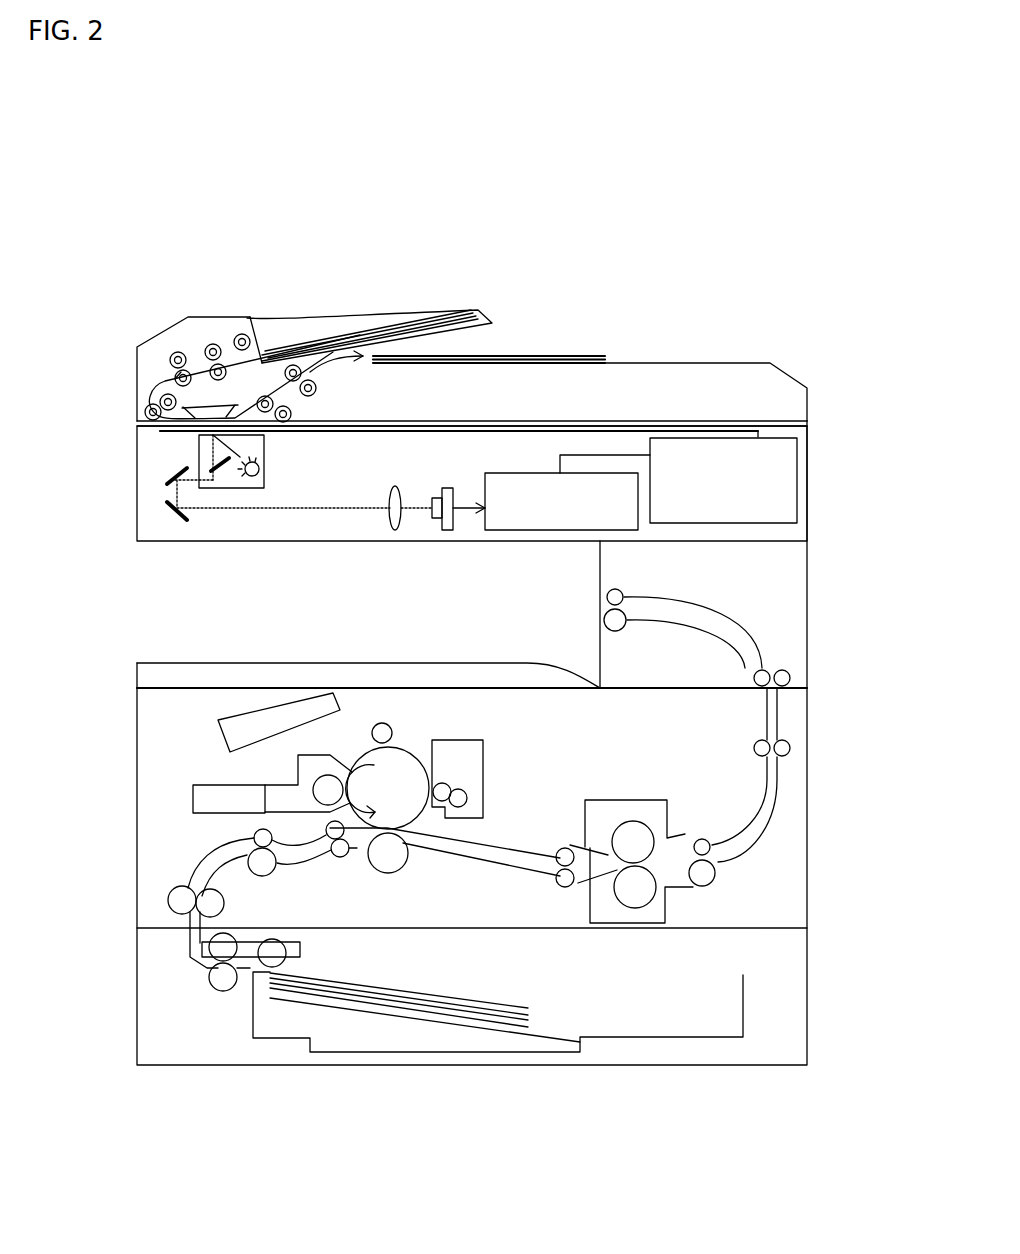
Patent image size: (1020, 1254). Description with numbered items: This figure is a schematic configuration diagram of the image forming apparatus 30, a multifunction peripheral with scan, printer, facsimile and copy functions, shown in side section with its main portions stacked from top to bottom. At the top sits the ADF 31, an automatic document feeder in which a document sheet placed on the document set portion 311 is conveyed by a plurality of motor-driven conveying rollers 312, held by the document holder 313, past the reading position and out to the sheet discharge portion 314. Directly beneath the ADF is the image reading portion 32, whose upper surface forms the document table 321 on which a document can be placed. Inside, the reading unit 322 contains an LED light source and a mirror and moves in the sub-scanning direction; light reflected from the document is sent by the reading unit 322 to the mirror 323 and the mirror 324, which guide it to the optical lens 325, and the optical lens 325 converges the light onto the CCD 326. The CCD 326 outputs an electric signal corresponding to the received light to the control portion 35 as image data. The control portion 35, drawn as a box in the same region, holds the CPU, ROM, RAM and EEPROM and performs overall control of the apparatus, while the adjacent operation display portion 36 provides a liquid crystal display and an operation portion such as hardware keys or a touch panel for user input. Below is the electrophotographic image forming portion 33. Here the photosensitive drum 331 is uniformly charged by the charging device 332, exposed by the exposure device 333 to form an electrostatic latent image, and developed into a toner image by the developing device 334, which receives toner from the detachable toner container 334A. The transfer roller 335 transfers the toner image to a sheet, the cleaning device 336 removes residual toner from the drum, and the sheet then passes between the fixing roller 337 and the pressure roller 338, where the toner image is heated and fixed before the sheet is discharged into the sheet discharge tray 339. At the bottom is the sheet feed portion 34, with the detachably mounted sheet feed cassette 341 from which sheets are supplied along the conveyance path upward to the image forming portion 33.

The image forming apparatus 30 is at (88, 335).
The ADF 31 is at (137, 371).
The document set portion 311 is at (292, 326).
The conveying rollers 312 is at (178, 352).
The document holder 313 is at (202, 416).
The sheet discharge portion 314 is at (615, 363).
The image reading portion 32 is at (137, 493).
The document table 321 is at (423, 432).
The reading unit 322 is at (265, 472).
The mirror 323 is at (165, 474).
The mirror 324 is at (170, 507).
The optical lens 325 is at (391, 532).
The CCD 326 is at (447, 532).
The control portion 35 is at (507, 473).
The operation display portion 36 is at (798, 452).
The image forming portion 33 is at (163, 713).
The photosensitive drum 331 is at (408, 750).
The charging device 332 is at (371, 735).
The exposure device 333 is at (222, 748).
The developing device 334 is at (296, 757).
The toner container 334A is at (210, 813).
The transfer roller 335 is at (396, 873).
The cleaning device 336 is at (460, 740).
The fixing roller 337 is at (650, 825).
The pressure roller 338 is at (617, 898).
The sheet discharge tray 339 is at (506, 663).
The sheet feed portion 34 is at (137, 1000).
The sheet feed cassette 341 is at (253, 1015).